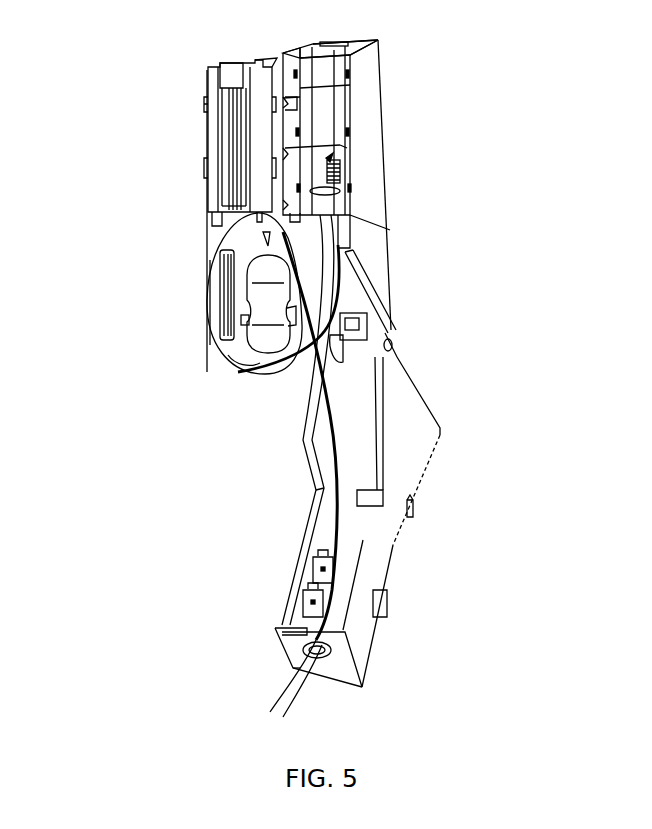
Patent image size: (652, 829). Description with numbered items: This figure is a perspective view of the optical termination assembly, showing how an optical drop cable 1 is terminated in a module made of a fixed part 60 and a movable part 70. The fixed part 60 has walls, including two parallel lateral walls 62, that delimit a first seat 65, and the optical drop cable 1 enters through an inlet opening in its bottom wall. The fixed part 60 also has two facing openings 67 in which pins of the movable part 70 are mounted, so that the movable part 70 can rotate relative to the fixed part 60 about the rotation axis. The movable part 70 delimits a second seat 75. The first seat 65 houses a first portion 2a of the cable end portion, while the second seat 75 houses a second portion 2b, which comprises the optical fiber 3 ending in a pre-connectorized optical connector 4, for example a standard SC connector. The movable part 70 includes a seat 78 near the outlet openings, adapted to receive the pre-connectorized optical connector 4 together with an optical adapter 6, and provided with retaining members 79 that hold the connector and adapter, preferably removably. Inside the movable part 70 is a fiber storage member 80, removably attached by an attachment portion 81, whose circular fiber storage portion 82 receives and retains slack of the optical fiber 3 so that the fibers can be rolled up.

The optical drop cable 1 is at (293, 697).
The first portion of the end portion 2a is at (333, 453).
The second portion of the end portion 2b is at (345, 263).
The optical fiber 3 is at (340, 523).
The pre-connectorized optical connector 4 is at (325, 195).
The fiber optic receptacle/adapter 6 is at (318, 57).
The fixed part 60 is at (419, 437).
The lateral wall 62 is at (403, 470).
The first seat 65 is at (355, 437).
The opening 67 is at (392, 350).
The movable part 70 is at (380, 237).
The second seat 75 is at (350, 286).
The seat 78 is at (340, 163).
The retaining member 79 is at (300, 105).
The fiber storage member 80 is at (165, 312).
The attachment portion 81 is at (225, 150).
The fiber storage portion 82 is at (213, 277).